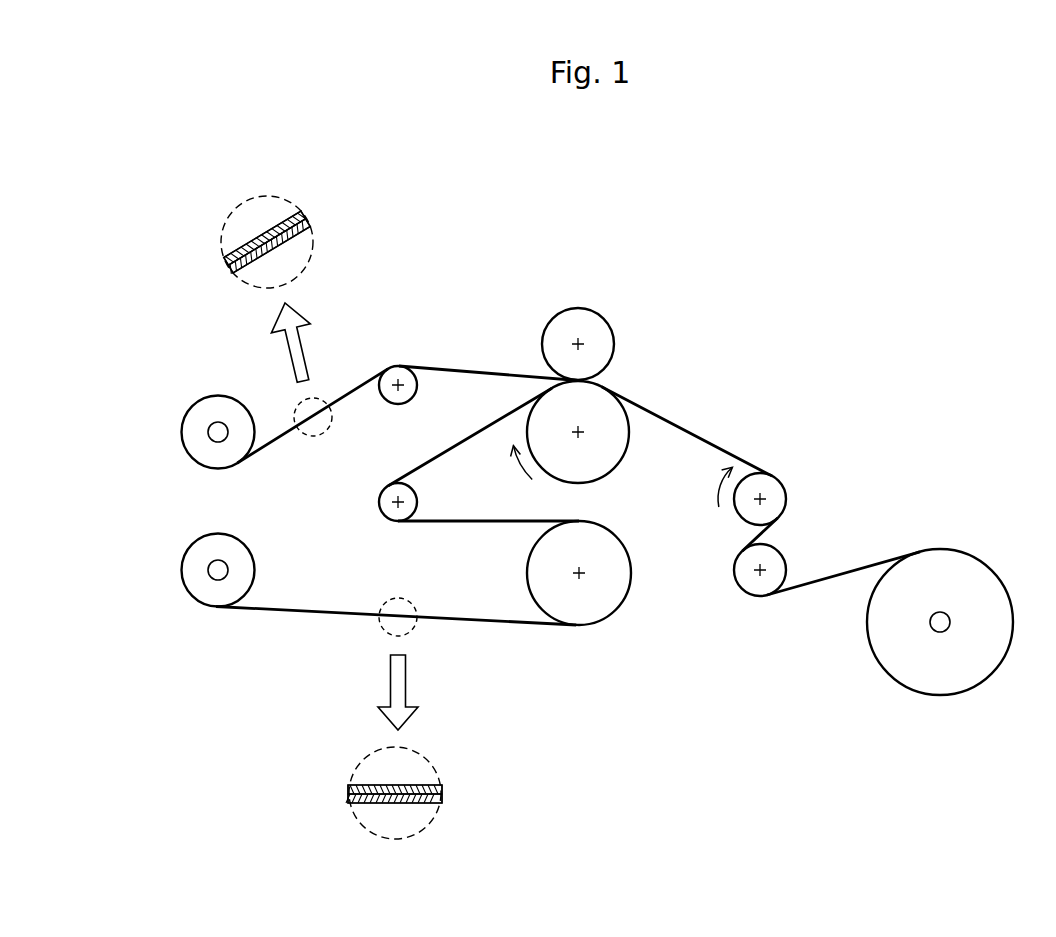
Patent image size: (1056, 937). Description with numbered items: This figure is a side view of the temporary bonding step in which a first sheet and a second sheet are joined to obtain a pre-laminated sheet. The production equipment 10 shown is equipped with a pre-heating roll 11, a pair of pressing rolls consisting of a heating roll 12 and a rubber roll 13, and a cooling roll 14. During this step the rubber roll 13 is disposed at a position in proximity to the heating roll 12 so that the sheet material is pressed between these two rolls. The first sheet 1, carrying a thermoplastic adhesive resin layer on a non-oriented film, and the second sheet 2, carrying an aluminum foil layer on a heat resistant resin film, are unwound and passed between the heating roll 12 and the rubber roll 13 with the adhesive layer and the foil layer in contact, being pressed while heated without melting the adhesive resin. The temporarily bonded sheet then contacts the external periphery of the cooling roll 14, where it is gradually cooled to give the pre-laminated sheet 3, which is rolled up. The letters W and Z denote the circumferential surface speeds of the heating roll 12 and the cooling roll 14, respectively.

The first sheet 1 is at (368, 324).
The second sheet 2 is at (381, 636).
The pre-laminated sheet 3 is at (847, 570).
The production equipment 10 is at (582, 447).
The pre-heating roll 11 is at (598, 603).
The heating roll 12 is at (618, 470).
The rubber roll 13 is at (598, 312).
The cooling roll 14 is at (742, 518).